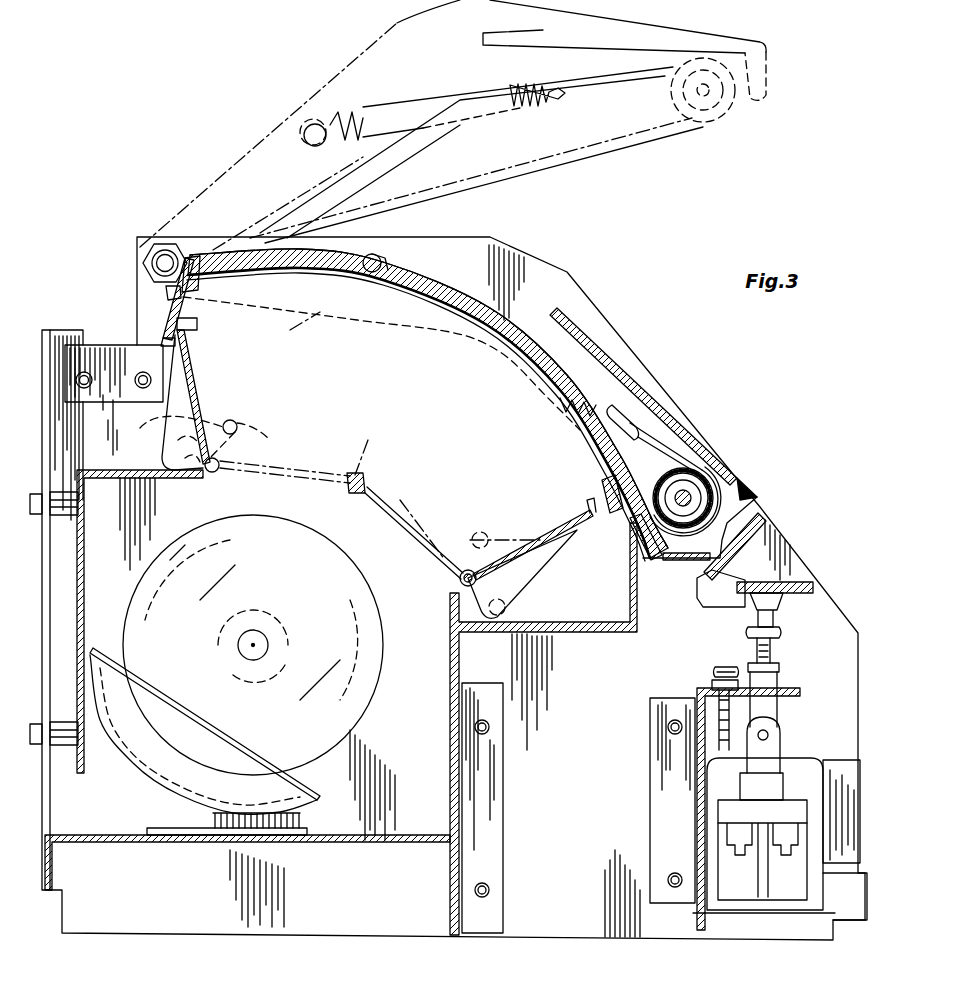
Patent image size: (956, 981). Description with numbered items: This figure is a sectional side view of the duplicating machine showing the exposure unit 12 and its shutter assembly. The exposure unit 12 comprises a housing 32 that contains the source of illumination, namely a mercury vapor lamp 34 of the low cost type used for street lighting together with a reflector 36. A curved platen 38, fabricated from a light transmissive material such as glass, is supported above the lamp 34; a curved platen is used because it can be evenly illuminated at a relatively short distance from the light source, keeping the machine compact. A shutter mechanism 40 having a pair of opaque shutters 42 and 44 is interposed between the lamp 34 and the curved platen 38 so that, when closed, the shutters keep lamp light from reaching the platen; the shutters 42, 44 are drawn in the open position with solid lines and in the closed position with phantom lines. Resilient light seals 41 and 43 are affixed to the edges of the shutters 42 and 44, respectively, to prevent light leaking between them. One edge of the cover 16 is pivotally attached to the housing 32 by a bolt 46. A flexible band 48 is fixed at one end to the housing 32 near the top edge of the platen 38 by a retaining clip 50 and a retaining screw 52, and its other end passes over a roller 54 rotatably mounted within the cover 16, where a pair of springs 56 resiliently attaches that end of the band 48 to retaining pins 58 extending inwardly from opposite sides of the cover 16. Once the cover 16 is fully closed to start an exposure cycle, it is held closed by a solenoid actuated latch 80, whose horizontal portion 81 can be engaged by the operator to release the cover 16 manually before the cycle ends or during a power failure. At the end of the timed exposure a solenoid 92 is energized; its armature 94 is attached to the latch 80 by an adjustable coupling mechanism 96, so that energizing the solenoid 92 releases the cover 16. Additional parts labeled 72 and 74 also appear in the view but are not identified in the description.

The exposure unit 12 is at (716, 372).
The cover 16 is at (712, 30).
The housing 32 is at (45, 625).
The mercury vapor lamp 34 is at (357, 705).
The reflector 36 is at (148, 762).
The curved platen 38 is at (298, 273).
The shutter mechanism 40 is at (404, 427).
The resilient light seal 41 is at (200, 322).
The shutter 42 is at (196, 378).
The resilient light seal 43 is at (362, 476).
The shutter 44 is at (430, 540).
The bolt 46 is at (142, 264).
The flexible band 48 is at (667, 450).
The retaining clip 50 is at (165, 322).
The retaining screw 52 is at (166, 294).
The roller 54 is at (700, 492).
The springs 56 is at (352, 110).
The retaining pins 58 is at (303, 145).
The pivot pin 72 is at (238, 424).
The triangular lever 74 is at (476, 535).
The solenoid actuated latch 80 is at (765, 528).
The horizontal portion 81 is at (790, 592).
The solenoid 92 is at (682, 803).
The armature 94 is at (775, 682).
The adjustable coupling mechanism 96 is at (742, 632).